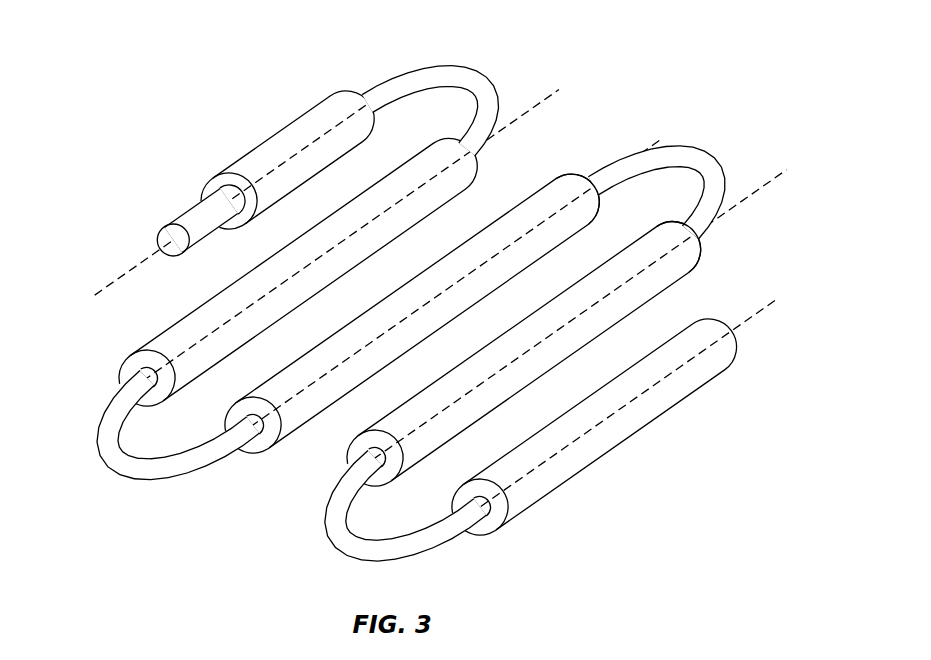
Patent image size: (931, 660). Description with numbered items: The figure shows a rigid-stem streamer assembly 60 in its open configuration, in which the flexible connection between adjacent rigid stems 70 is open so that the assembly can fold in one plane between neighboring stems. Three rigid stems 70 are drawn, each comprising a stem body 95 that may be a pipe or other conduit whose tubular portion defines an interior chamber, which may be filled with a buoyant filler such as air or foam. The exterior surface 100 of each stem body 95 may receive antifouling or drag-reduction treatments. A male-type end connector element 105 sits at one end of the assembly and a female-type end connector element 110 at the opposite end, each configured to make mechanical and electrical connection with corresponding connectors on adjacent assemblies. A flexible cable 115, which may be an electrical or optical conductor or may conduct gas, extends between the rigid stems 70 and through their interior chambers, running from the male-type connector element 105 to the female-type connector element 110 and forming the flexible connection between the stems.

The rigid-stem streamer assembly 60 is at (641, 47).
The rigid stem 70 is at (139, 336).
The stem body 95 is at (257, 267).
The exterior surface 100 is at (519, 198).
The male-type end connector element 105 is at (270, 138).
The female-type end connector element 110 is at (614, 450).
The flexible cable 115 is at (446, 66).